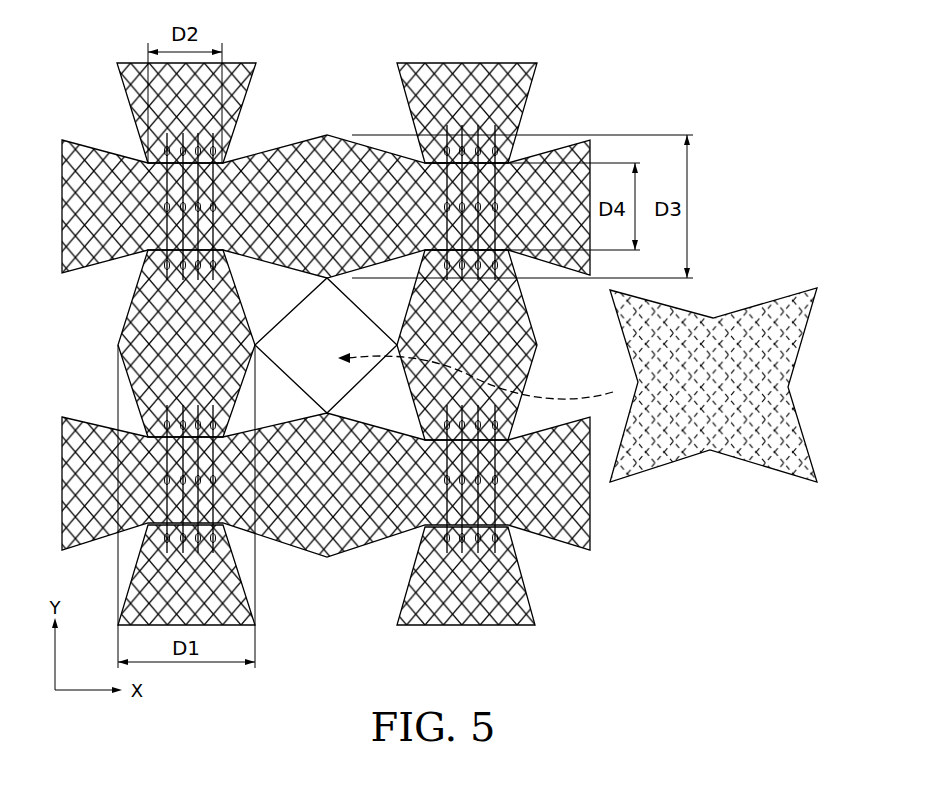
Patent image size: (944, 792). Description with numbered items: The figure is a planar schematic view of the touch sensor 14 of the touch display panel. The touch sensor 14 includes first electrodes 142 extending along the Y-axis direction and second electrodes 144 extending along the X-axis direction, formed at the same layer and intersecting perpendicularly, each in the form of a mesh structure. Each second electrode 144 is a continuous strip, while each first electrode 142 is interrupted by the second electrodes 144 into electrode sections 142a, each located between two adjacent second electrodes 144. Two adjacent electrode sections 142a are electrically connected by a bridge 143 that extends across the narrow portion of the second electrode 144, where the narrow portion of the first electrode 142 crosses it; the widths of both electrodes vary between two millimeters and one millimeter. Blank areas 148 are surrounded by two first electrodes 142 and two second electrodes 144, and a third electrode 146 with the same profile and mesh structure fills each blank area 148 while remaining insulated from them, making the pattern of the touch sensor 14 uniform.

The touch sensor 14 is at (314, 314).
The first electrode 142 is at (270, 101).
The electrode section 142a is at (163, 340).
The bridge 143 is at (158, 217).
The second electrode 144 is at (95, 178).
The third electrode 146 is at (726, 452).
The blank area 148 is at (305, 385).